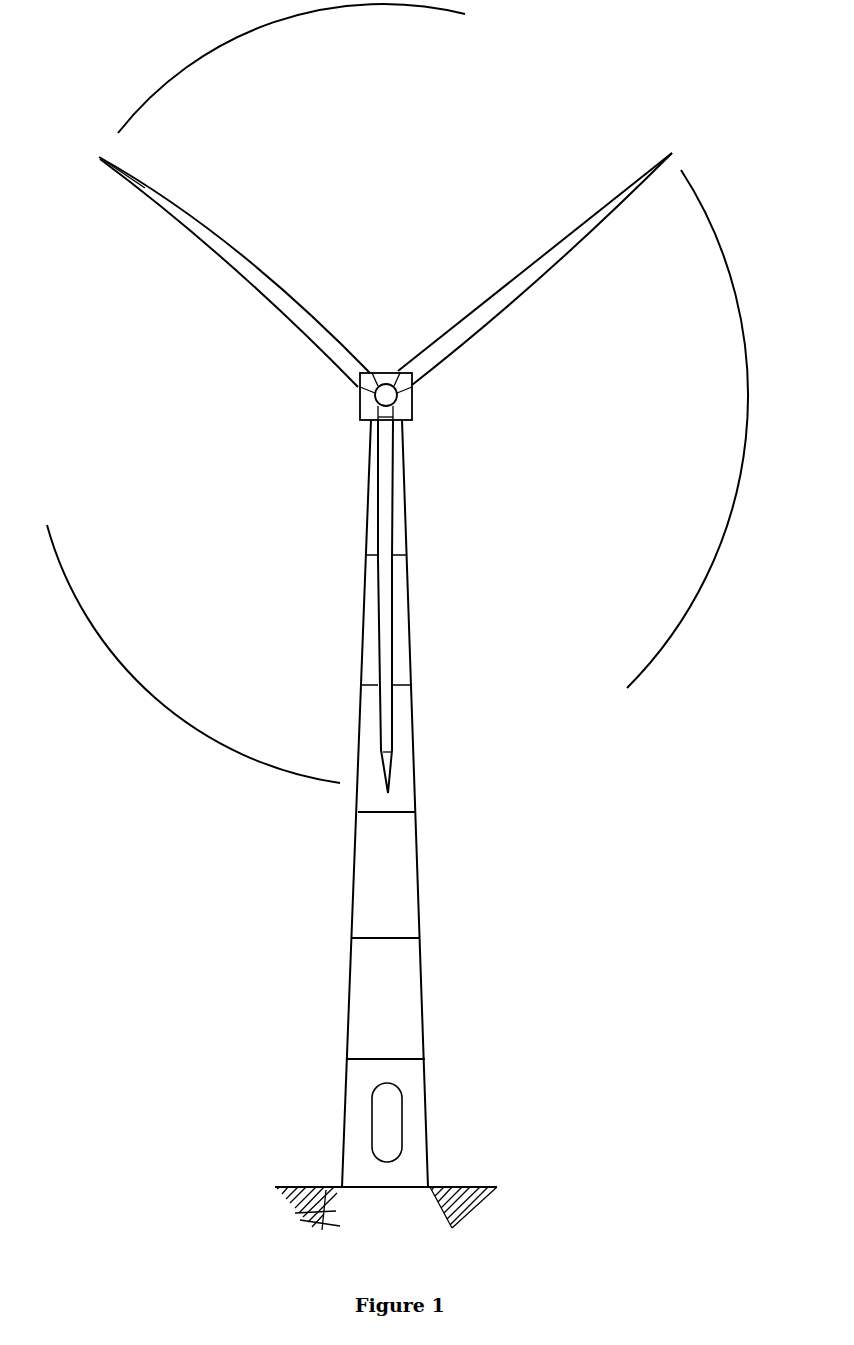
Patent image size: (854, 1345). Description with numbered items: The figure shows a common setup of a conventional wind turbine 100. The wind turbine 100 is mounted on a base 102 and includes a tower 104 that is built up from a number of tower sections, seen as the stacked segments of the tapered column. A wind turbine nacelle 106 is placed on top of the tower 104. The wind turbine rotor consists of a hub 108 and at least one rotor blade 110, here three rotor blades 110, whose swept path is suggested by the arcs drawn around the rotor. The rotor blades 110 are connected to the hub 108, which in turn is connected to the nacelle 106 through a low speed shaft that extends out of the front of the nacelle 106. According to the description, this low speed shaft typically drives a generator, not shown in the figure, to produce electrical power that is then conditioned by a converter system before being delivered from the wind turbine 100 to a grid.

The wind turbine 100 is at (302, 963).
The base 102 is at (290, 1201).
The tower 104 is at (410, 872).
The wind turbine nacelle 106 is at (412, 403).
The hub 108 is at (360, 410).
The rotor blade 110 is at (385, 652).